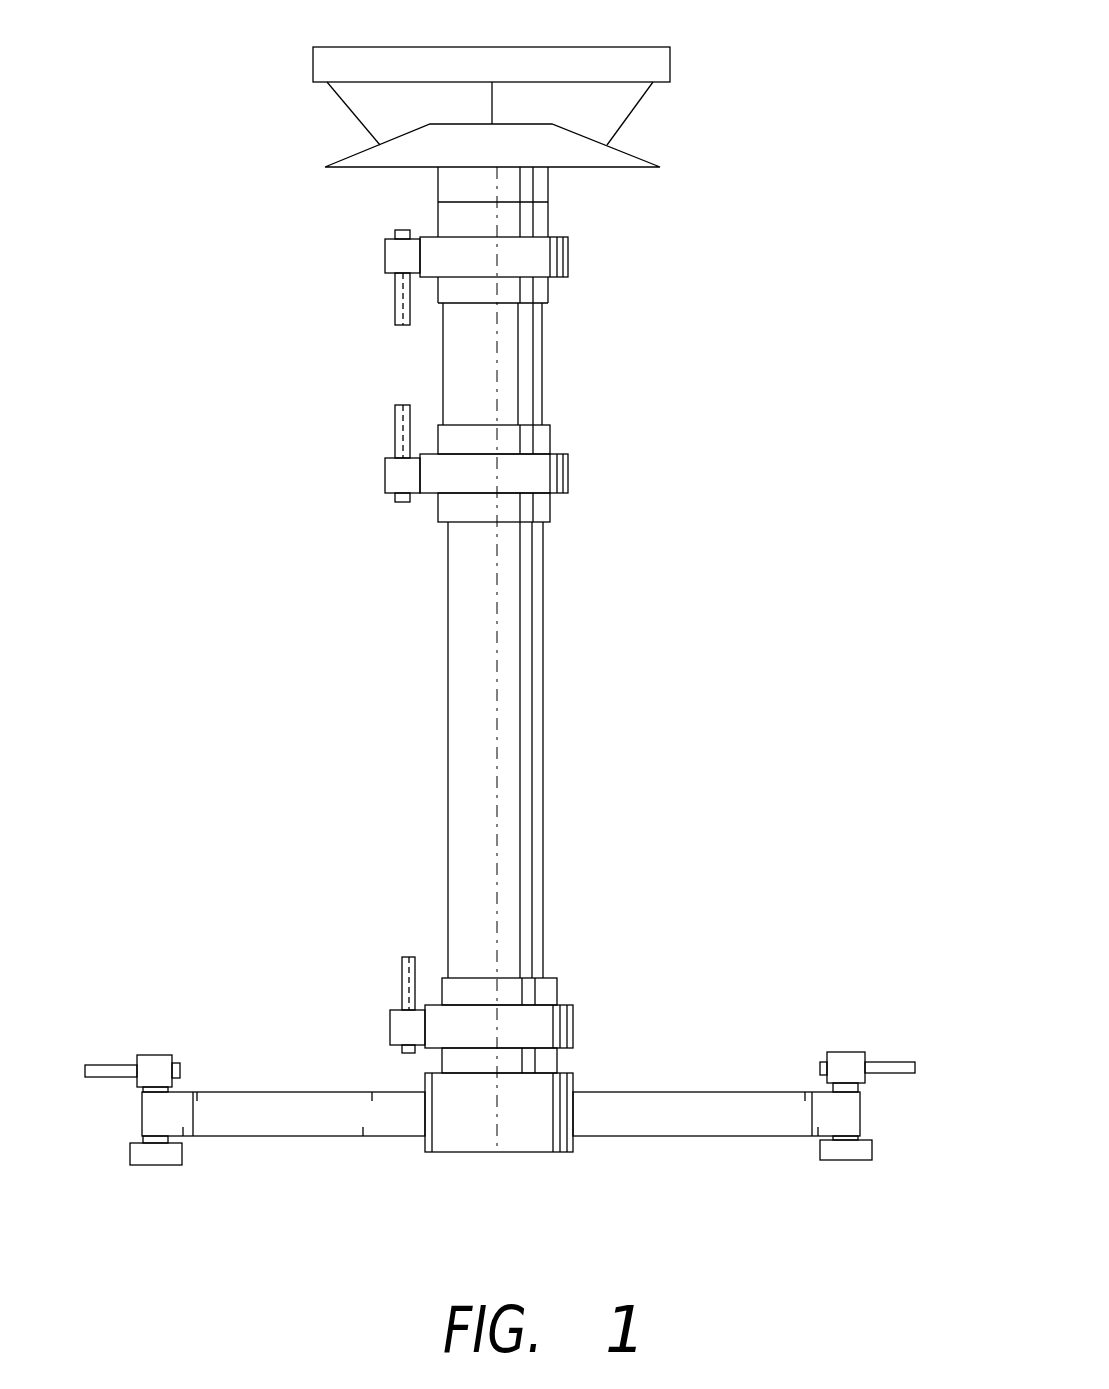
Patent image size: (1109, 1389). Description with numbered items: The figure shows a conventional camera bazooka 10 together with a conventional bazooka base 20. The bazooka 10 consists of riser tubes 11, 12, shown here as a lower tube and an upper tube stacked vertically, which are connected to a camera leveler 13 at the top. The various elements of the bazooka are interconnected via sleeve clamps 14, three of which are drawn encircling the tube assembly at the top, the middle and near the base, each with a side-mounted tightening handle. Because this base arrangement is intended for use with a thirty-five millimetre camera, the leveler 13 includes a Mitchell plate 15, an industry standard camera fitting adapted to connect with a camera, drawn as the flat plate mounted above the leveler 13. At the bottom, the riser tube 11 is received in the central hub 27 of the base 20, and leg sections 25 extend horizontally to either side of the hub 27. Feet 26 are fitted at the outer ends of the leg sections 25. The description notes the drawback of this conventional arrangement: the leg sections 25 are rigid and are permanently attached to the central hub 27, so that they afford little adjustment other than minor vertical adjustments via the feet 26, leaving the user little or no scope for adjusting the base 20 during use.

The camera bazooka 10 is at (258, 634).
The riser tube 11 is at (545, 750).
The riser tube 12 is at (542, 365).
The camera leveler 13 is at (640, 162).
The sleeve clamp 14 is at (568, 256).
The Mitchell plate 15 is at (670, 62).
The bazooka base 20 is at (519, 1168).
The leg section 25 is at (283, 1137).
The foot 26 is at (158, 1165).
The central hub 27 is at (475, 1130).